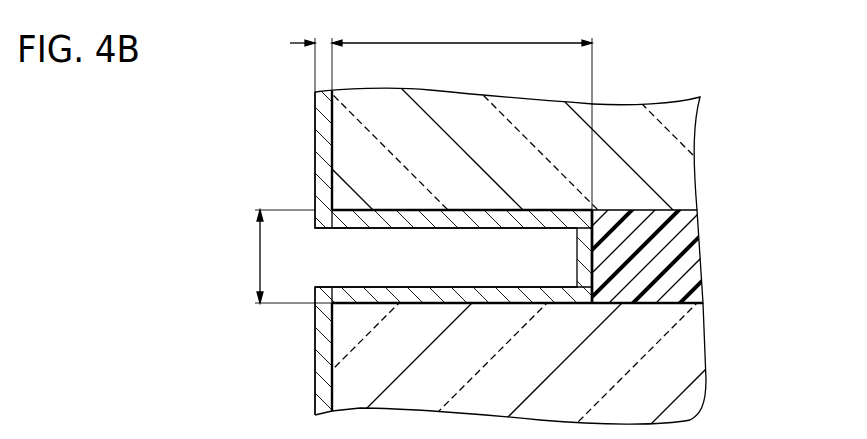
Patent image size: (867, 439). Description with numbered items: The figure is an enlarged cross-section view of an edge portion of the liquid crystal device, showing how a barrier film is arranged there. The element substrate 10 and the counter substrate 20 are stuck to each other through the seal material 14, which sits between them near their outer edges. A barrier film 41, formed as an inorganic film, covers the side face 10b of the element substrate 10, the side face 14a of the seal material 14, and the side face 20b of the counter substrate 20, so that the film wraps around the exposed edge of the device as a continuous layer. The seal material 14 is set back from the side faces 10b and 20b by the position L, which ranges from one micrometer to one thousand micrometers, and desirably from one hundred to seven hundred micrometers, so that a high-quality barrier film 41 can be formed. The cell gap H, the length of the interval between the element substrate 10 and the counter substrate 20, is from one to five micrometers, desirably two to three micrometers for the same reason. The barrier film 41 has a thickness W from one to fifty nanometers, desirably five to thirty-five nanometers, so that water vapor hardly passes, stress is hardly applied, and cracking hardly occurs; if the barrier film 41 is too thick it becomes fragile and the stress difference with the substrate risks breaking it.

The element substrate 10 is at (705, 360).
The side face of the element substrate 10b is at (325, 355).
The seal material 14 is at (700, 254).
The side face of the seal material 14a is at (585, 268).
The counter substrate 20 is at (683, 157).
The side face of the counter substrate 20b is at (325, 165).
The barrier film 41 is at (320, 126).
The thickness of the barrier film W is at (312, 53).
The position of the seal material L is at (462, 112).
The cell gap H is at (284, 256).